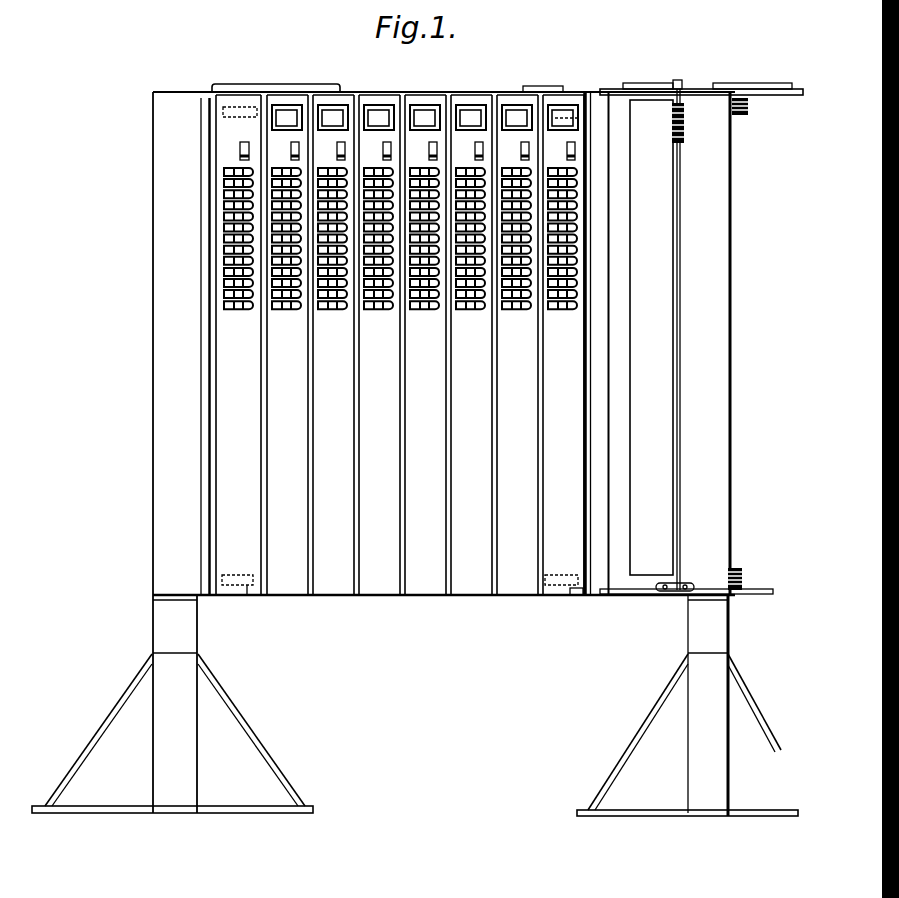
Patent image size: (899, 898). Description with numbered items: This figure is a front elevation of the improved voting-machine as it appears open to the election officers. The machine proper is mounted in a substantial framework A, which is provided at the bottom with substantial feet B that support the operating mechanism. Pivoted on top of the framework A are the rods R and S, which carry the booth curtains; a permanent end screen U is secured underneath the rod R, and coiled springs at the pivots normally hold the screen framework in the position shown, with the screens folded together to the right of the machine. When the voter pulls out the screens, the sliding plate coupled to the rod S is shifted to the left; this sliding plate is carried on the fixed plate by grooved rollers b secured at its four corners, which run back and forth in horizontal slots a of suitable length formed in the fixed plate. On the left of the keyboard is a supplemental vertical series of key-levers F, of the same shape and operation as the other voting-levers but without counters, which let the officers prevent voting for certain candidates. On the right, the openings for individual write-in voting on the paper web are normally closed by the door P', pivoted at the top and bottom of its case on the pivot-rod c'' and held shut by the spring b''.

The framework A is at (165, 326).
The feet B is at (122, 740).
The rod R is at (258, 88).
The rod S is at (793, 89).
The end screen U is at (205, 371).
The supplemental series of levers F is at (236, 314).
The door P' is at (651, 337).
The pivot-rod c'' is at (683, 335).
The spring b'' is at (696, 123).
The grooved rollers b is at (400, 565).
The horizontal slots a is at (248, 586).